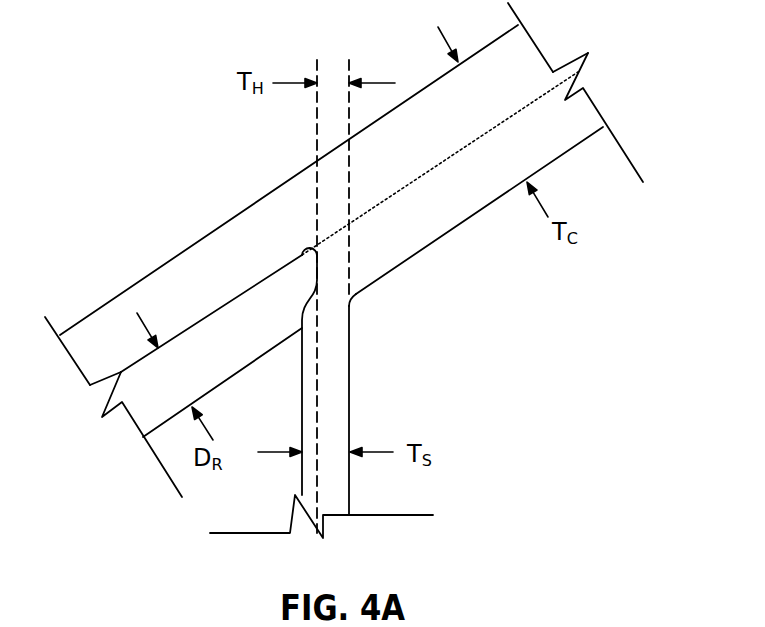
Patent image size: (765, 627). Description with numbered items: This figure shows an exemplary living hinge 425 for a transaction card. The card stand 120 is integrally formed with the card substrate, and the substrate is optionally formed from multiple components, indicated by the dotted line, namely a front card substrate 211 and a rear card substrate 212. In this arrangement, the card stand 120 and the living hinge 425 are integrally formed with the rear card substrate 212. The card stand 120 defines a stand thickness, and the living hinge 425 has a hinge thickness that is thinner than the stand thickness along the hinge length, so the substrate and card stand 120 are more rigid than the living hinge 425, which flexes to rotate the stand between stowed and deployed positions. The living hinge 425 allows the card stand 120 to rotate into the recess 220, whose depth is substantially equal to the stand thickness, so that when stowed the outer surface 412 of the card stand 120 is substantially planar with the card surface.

The front card substrate 211 is at (192, 243).
The rear card substrate 212 is at (432, 245).
The recess 220 is at (132, 423).
The card stand 120 is at (334, 393).
The living hinge 425 is at (353, 300).
The outer surface 412 is at (350, 397).